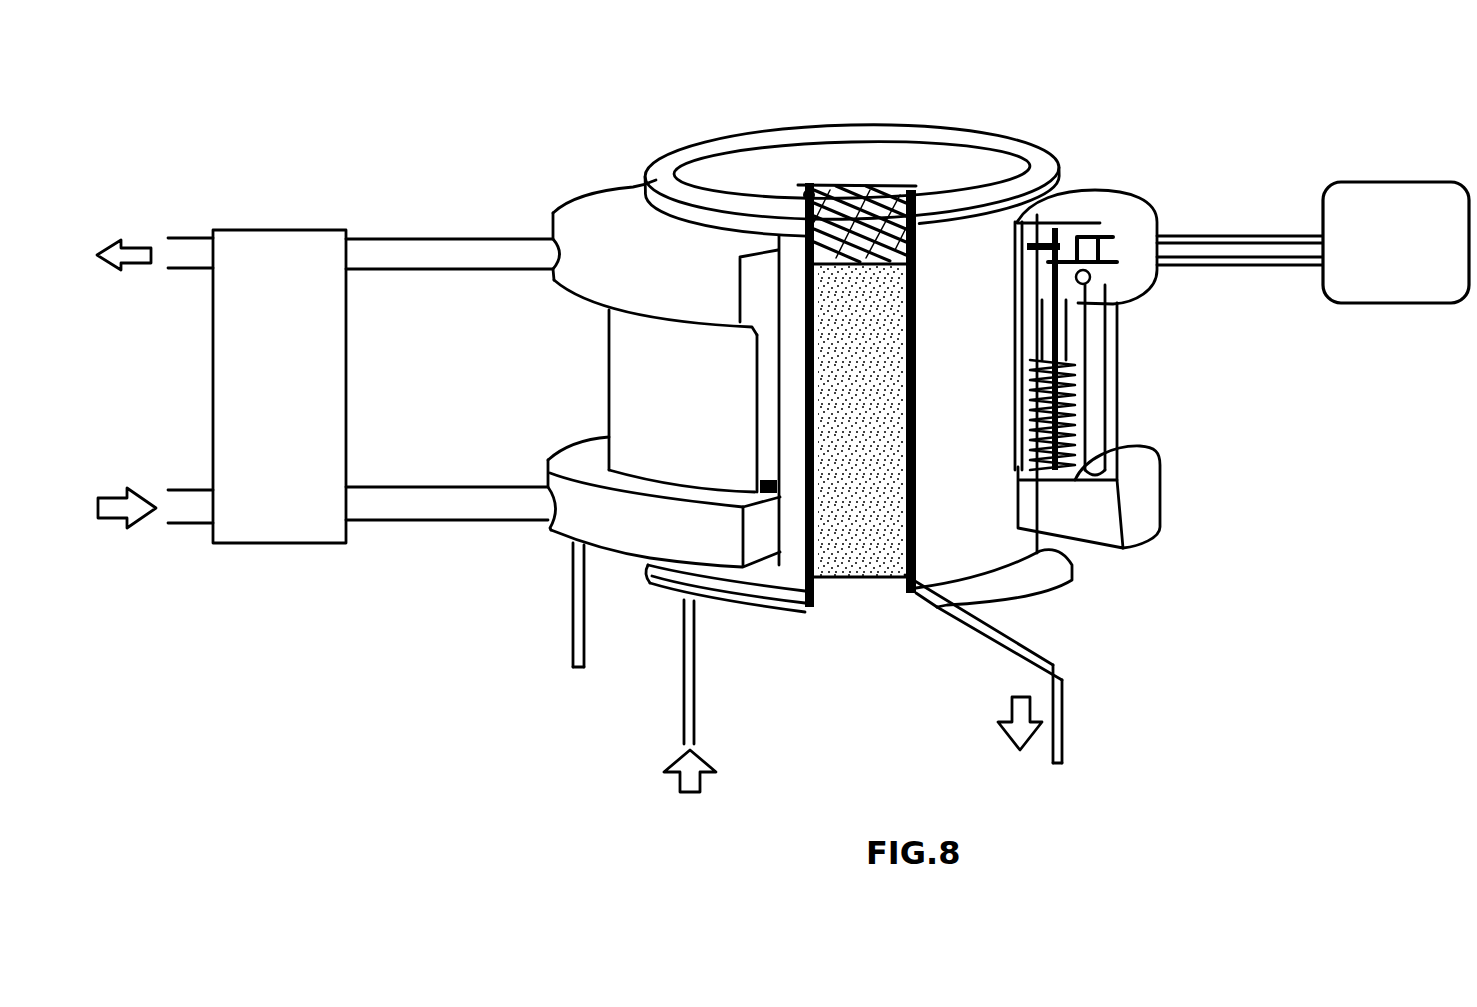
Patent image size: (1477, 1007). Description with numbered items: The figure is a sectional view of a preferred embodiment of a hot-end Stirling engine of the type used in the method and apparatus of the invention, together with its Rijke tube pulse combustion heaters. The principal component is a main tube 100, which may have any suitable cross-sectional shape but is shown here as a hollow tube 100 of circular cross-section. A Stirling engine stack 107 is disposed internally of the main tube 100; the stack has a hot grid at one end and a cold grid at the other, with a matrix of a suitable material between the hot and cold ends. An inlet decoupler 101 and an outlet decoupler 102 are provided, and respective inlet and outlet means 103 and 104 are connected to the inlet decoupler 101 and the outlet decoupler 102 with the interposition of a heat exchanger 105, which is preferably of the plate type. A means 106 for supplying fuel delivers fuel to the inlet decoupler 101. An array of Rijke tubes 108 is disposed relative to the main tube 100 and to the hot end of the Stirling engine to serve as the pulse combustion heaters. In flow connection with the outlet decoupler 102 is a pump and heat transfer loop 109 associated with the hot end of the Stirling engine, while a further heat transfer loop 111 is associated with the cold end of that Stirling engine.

The main tube 100 is at (955, 148).
The inlet decoupler 101 is at (1107, 497).
The outlet decoupler 102 is at (612, 210).
The inlet means 103 is at (180, 512).
The outlet means 104 is at (158, 218).
The heat exchanger 105 is at (273, 378).
The means for supplying fuel 106 is at (572, 663).
The Stirling engine stack 107 is at (828, 178).
The array of Rijke tubes 108 is at (1083, 371).
The pump and heat transfer loop 109 is at (1350, 228).
The heat transfer loop 111 is at (1065, 683).